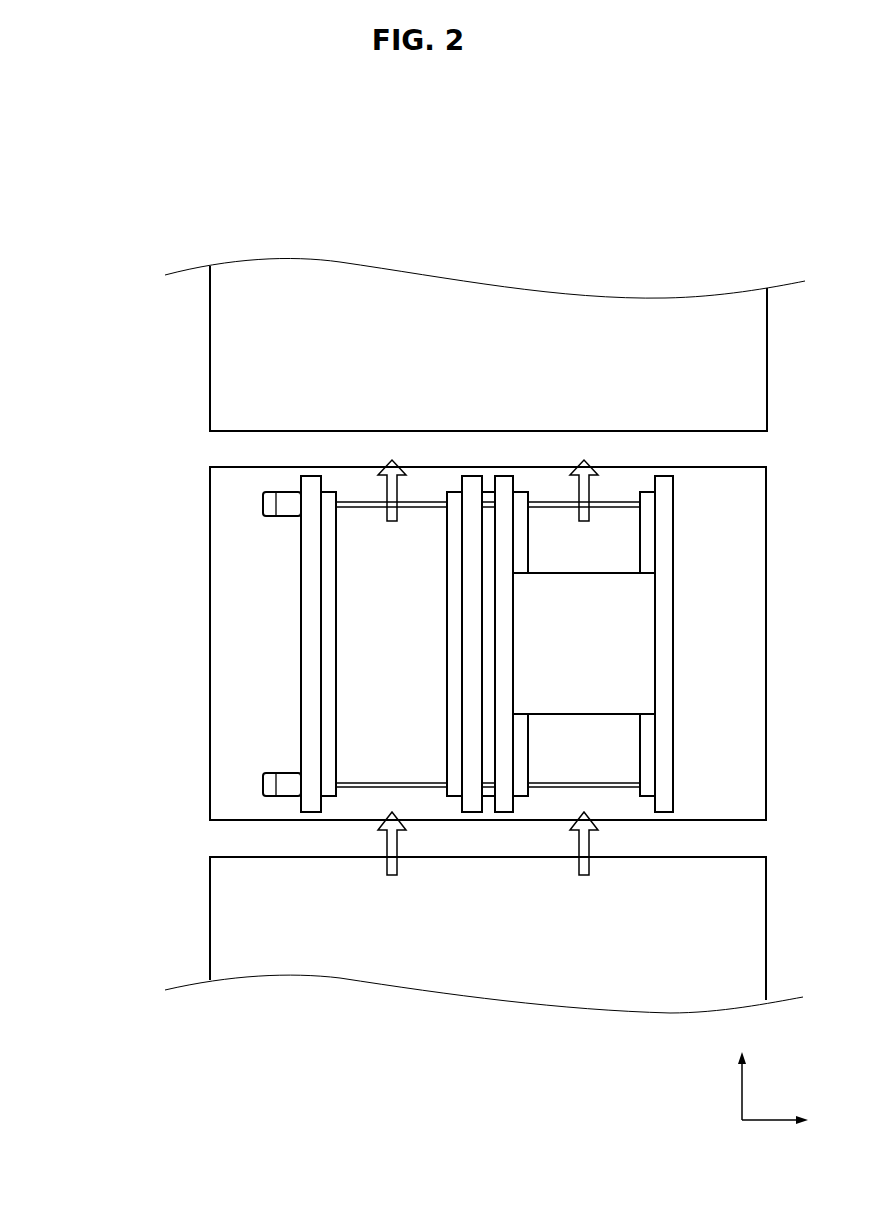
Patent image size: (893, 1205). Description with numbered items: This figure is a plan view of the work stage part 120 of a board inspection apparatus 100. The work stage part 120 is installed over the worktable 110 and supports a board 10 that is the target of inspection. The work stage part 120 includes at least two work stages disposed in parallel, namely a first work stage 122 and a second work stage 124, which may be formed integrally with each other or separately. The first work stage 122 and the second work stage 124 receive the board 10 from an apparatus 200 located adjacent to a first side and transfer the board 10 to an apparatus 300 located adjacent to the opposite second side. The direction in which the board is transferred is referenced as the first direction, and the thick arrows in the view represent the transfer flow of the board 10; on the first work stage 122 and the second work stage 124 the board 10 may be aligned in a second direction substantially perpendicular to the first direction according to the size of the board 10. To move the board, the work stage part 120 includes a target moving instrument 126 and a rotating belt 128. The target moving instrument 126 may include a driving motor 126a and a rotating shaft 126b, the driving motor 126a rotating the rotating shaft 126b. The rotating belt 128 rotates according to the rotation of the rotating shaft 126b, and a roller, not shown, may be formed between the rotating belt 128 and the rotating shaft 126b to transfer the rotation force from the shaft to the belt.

The board 10 is at (623, 587).
The board inspection apparatus 100 is at (181, 481).
The worktable 110 is at (708, 797).
The work stage part 120 is at (63, 540).
The first work stage 122 is at (298, 657).
The second work stage 124 is at (493, 585).
The target moving instrument 126 is at (113, 735).
The driving motor 126a is at (357, 784).
The rotating shaft 126b is at (263, 787).
The rotating belt 128 is at (328, 537).
The apparatus adjacent to a first side 200 is at (181, 928).
The apparatus adjacent to a second side 300 is at (181, 326).